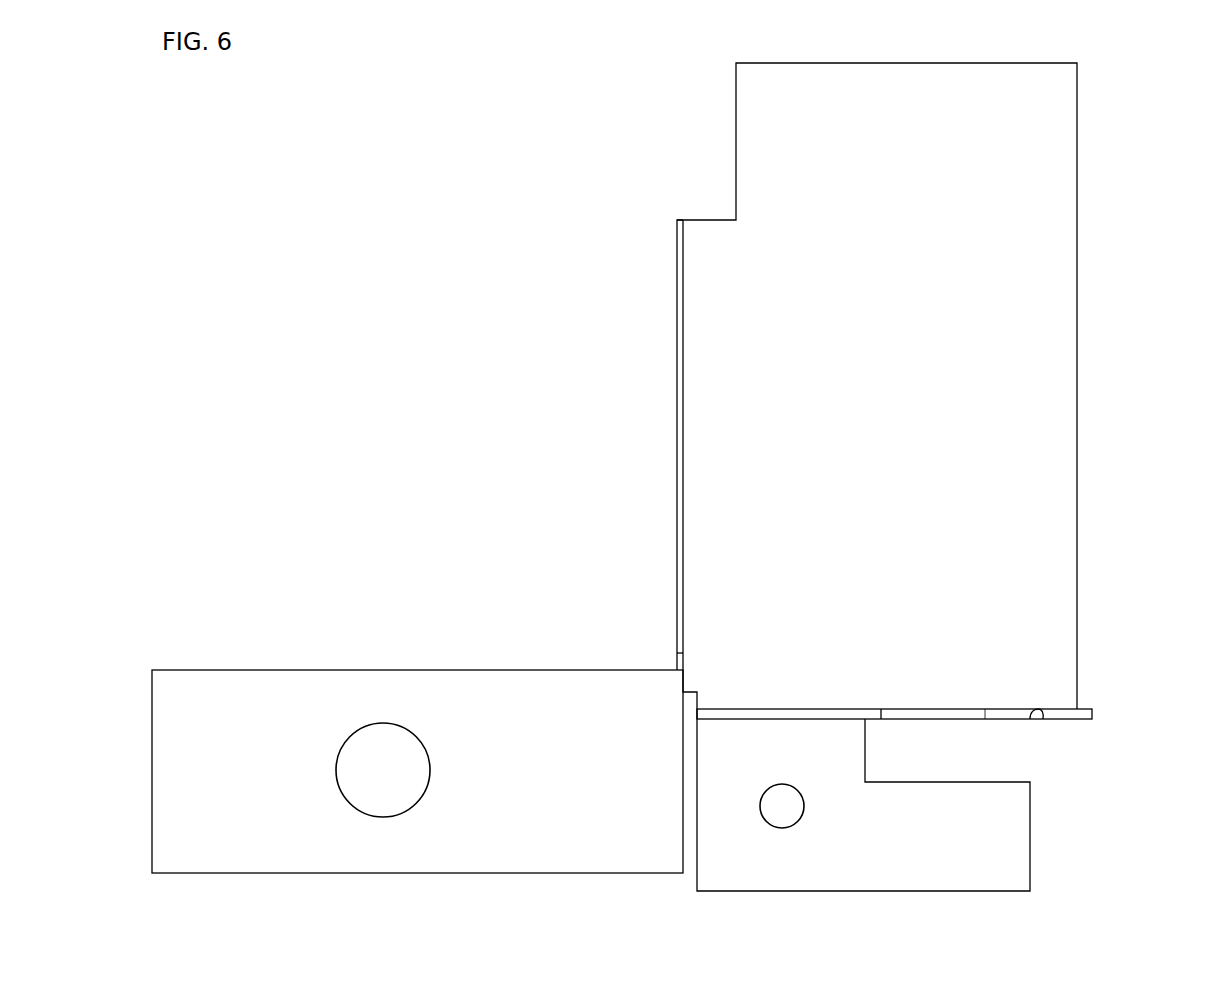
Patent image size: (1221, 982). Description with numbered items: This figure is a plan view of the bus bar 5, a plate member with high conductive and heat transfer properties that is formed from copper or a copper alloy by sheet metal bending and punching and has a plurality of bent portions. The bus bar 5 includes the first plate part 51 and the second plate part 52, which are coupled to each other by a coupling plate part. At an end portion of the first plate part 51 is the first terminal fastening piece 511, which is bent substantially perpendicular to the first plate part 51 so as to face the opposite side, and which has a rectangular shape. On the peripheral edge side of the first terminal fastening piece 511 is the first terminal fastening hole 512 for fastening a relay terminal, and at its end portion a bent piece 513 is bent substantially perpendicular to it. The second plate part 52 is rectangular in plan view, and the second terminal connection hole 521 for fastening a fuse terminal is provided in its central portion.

The bus bar 5 is at (445, 185).
The first plate part 51 is at (1035, 400).
The first terminal fastening piece 511 is at (1083, 719).
The first terminal fastening hole 512 is at (1032, 722).
The bent piece 513 is at (1005, 848).
The second plate part 52 is at (246, 693).
The second terminal connection hole 521 is at (385, 733).